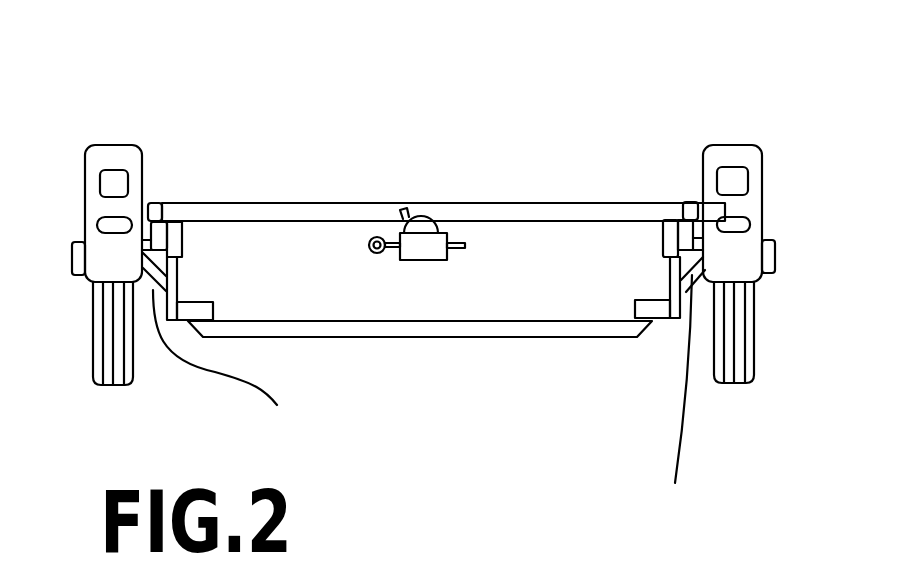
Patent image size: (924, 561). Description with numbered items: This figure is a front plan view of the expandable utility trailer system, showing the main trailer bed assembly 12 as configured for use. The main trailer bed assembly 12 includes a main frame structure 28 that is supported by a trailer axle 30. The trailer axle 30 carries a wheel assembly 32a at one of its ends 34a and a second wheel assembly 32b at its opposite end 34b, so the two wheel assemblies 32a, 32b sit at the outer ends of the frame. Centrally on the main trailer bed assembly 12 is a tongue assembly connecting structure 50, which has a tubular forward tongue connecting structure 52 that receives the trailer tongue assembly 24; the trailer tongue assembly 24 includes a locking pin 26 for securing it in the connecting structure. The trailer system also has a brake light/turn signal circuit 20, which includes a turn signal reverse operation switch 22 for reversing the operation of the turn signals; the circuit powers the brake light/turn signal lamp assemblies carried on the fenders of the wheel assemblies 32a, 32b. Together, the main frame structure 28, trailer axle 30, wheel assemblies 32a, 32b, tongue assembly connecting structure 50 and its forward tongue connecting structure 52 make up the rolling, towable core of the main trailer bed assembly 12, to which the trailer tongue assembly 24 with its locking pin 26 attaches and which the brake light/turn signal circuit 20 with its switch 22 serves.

The main trailer bed assembly 12 is at (563, 177).
The brake light/turn signal circuit 20 is at (75, 280).
The turn signal reverse operation switch 22 is at (113, 175).
The trailer tongue assembly 24 is at (428, 203).
The locking pin 26 is at (368, 252).
The main frame structure 28 is at (665, 285).
The trailer axle 30 is at (420, 409).
The wheel assembly 32a is at (107, 390).
The wheel assembly 32b is at (742, 392).
The end of trailer axle 34a is at (241, 384).
The end of trailer axle 34b is at (666, 418).
The tongue assembly connecting structure 50 is at (458, 255).
The tubular forward tongue connecting structure 52 is at (418, 250).